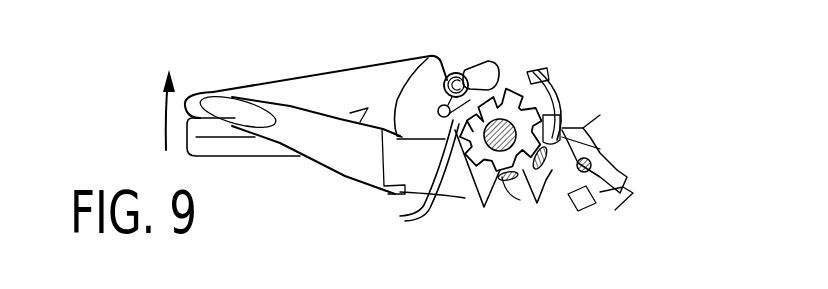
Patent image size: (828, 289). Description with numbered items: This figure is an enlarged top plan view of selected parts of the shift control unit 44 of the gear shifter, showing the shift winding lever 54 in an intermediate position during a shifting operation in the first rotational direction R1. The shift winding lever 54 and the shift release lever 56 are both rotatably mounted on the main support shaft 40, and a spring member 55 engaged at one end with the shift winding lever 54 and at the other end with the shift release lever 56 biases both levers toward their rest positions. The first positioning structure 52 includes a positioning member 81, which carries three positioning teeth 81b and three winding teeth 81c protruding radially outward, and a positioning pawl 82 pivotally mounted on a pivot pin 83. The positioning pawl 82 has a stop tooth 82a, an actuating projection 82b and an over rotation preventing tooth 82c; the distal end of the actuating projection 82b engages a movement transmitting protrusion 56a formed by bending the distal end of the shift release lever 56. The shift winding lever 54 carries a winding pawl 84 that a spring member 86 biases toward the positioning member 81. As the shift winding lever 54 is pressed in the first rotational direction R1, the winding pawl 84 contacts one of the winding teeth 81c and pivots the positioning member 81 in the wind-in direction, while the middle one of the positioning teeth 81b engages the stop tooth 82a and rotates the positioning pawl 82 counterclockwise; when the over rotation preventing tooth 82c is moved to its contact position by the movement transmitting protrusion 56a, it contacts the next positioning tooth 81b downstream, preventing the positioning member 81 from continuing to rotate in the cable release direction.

The first rotational direction R1 is at (160, 127).
The main support shaft 40 is at (520, 86).
The shift control unit 44 is at (645, 77).
The first positioning structure 52 is at (519, 238).
The shift winding lever 54 is at (318, 77).
The spring member 55 is at (548, 72).
The shift release lever 56 is at (342, 172).
The movement transmitting protrusion 56a is at (590, 203).
The positioning member 81 is at (480, 199).
The positioning teeth 81b is at (560, 117).
The winding teeth 81c is at (490, 58).
The positioning pawl 82 is at (541, 197).
The stop tooth 82a is at (545, 206).
The actuating projection 82b is at (613, 182).
The over rotation preventing tooth 82c is at (562, 128).
The pivot pin 83 is at (592, 165).
The winding pawl 84 is at (468, 66).
The spring member 86 is at (440, 104).